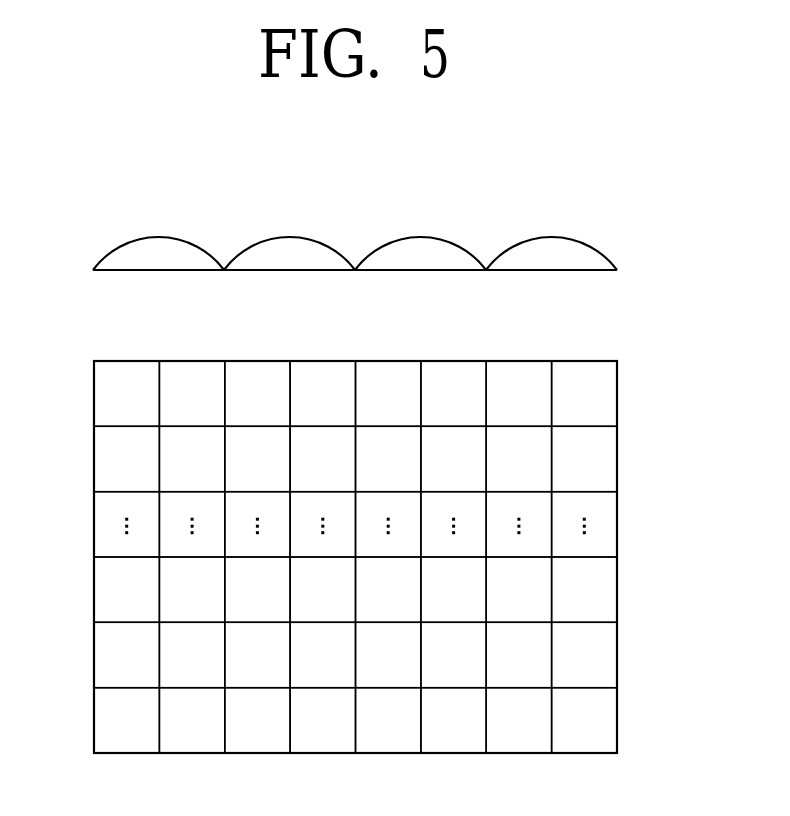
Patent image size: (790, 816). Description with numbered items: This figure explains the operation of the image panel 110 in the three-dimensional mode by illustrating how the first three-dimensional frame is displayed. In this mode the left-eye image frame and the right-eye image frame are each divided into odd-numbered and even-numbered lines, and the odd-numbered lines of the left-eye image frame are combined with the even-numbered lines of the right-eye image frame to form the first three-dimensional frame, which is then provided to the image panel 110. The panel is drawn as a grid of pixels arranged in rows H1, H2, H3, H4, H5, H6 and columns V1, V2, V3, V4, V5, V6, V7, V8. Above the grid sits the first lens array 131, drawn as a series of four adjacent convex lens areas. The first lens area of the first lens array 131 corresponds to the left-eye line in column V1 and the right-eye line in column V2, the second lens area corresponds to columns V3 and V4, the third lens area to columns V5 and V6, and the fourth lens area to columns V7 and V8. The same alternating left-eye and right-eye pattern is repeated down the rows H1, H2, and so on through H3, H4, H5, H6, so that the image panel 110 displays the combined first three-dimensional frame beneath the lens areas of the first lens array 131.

The image panel 110 is at (376, 527).
The first lens array 131 is at (590, 243).
The column V1 is at (130, 360).
The column V2 is at (196, 360).
The column V3 is at (261, 360).
The column V4 is at (326, 360).
The column V5 is at (392, 360).
The column V6 is at (457, 360).
The column V7 is at (522, 360).
The column V8 is at (588, 360).
The row H1 is at (93, 398).
The row H2 is at (93, 463).
The row H3 is at (93, 528).
The row H4 is at (93, 594).
The row H5 is at (93, 659).
The row H6 is at (93, 724).